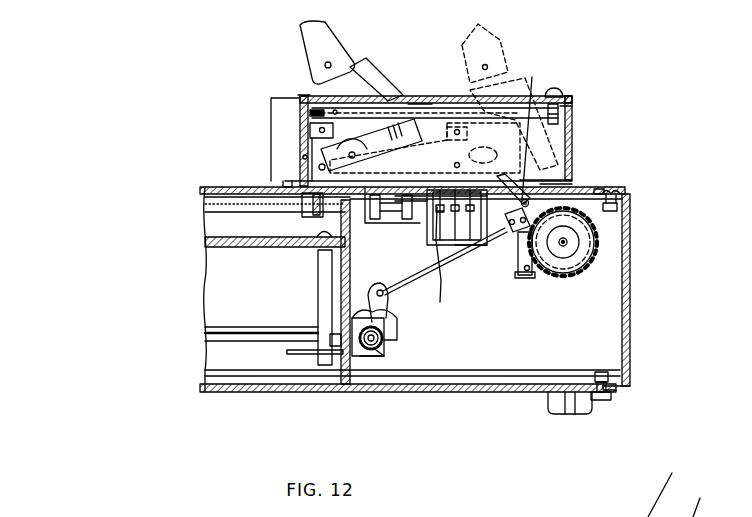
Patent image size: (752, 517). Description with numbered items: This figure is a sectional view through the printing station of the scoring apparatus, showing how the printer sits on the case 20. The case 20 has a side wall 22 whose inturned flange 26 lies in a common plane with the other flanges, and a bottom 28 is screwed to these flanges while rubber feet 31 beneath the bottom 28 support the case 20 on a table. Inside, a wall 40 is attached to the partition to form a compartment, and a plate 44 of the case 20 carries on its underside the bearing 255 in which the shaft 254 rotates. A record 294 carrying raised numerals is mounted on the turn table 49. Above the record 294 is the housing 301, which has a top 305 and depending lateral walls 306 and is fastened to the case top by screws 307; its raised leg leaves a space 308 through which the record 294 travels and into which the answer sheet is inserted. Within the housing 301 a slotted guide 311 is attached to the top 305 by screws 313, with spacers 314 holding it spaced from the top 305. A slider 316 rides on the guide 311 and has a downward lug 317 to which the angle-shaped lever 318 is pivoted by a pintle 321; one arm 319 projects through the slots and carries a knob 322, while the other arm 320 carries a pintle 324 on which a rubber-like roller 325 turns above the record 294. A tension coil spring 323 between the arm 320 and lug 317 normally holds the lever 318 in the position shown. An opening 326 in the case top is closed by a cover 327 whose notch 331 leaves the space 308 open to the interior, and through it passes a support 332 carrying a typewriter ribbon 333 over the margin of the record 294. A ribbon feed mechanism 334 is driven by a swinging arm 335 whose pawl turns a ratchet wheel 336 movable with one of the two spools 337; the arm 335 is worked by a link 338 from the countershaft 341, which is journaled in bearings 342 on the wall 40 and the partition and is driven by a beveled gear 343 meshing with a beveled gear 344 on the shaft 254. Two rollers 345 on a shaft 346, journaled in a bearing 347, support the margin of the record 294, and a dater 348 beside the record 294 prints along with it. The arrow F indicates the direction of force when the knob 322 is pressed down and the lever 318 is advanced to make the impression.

The case 20 is at (630, 386).
The side wall 22 is at (632, 305).
The inturned flange 26 is at (594, 401).
The bottom 28 is at (215, 393).
The rubber foot 31 is at (547, 405).
The wall 40 is at (347, 272).
The plate 44 is at (205, 240).
The turn table 49 is at (203, 202).
The shaft 254 is at (243, 340).
The bearing 255 is at (323, 312).
The record 294 is at (210, 187).
The housing 301 is at (566, 100).
The top 305 is at (420, 96).
The lateral wall 306 is at (300, 133).
The screw 307 is at (300, 97).
The space 308 is at (552, 187).
The guide 311 is at (443, 108).
The screw 313 is at (555, 88).
The spacer 314 is at (574, 108).
The slider 316 is at (335, 110).
The lug 317 is at (317, 148).
The angle-shaped lever 318 is at (398, 128).
The arm 319 is at (358, 83).
The arm 320 is at (303, 155).
The pintle 321 is at (307, 217).
The knob 322 is at (313, 35).
The tension coil spring 323 is at (271, 100).
The pintle 324 is at (352, 205).
The roller 325 is at (377, 153).
The opening 326 is at (597, 193).
The cover 327 is at (633, 195).
The notch 331 is at (457, 217).
The support 332 is at (468, 245).
The typewriter ribbon 333 is at (530, 127).
The ribbon feed mechanism 334 is at (570, 265).
The swinging arm 335 is at (512, 232).
The ratchet wheel 336 is at (560, 268).
The spool 337 is at (600, 240).
The link 338 is at (412, 278).
The countershaft 341 is at (370, 356).
The bearing 342 is at (382, 357).
The beveled gear 343 is at (387, 337).
The beveled gear 344 is at (347, 357).
The roller 345 is at (401, 216).
The shaft 346 is at (418, 222).
The bearing 347 is at (418, 266).
The dater 348 is at (438, 212).
The force direction F is at (572, 106).